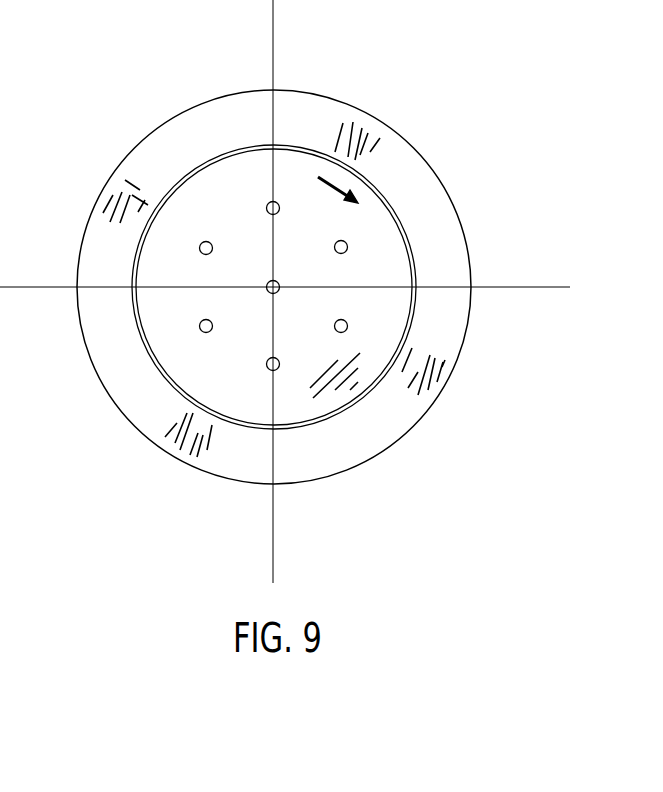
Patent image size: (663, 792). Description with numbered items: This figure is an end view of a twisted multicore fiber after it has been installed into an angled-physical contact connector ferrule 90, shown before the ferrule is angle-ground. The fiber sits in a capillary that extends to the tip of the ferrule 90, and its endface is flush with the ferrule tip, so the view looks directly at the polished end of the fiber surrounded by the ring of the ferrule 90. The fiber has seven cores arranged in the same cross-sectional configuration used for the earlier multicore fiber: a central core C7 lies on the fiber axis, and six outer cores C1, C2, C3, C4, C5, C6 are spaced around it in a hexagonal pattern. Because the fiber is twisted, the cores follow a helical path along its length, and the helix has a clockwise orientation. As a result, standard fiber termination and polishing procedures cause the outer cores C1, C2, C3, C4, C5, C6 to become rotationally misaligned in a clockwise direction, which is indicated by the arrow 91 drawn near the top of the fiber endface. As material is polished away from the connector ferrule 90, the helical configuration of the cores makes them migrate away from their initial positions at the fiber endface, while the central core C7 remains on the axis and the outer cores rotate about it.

The ferrule 90 is at (422, 197).
The arrow 91 is at (316, 186).
The outer core C1 is at (282, 198).
The outer core C2 is at (350, 236).
The outer core C3 is at (350, 316).
The outer core C4 is at (282, 354).
The outer core C5 is at (215, 316).
The outer core C6 is at (215, 238).
The central core C7 is at (282, 276).